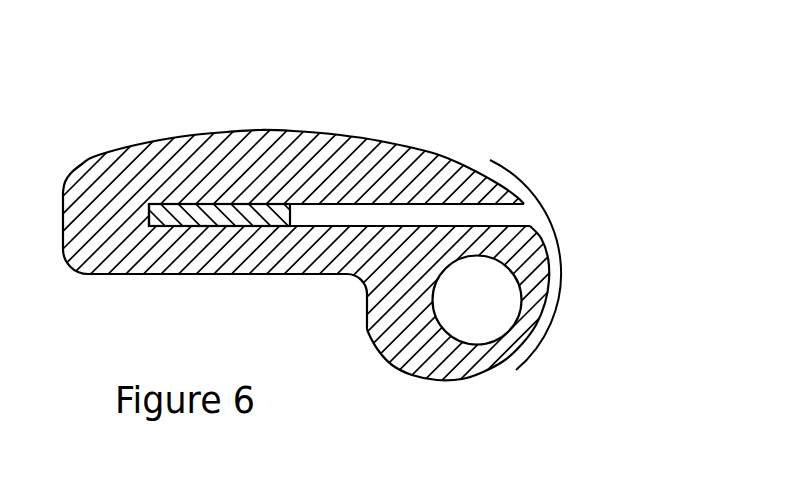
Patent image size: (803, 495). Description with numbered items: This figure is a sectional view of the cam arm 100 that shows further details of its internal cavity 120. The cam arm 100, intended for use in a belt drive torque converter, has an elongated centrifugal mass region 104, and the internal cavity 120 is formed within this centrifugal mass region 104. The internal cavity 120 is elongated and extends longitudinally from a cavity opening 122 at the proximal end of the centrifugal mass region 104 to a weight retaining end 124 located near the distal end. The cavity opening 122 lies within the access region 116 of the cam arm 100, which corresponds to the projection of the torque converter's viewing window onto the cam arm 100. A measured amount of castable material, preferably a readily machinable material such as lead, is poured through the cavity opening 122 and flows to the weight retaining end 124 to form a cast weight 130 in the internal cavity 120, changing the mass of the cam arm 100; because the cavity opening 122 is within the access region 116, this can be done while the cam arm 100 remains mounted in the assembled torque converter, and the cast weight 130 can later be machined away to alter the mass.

The cam arm 100 is at (387, 112).
The centrifugal mass region 104 is at (313, 129).
The weight retaining end 124 is at (147, 204).
The cast weight 130 is at (230, 207).
The internal cavity 120 is at (412, 213).
The cavity opening 122 is at (530, 210).
The access region 116 is at (560, 292).